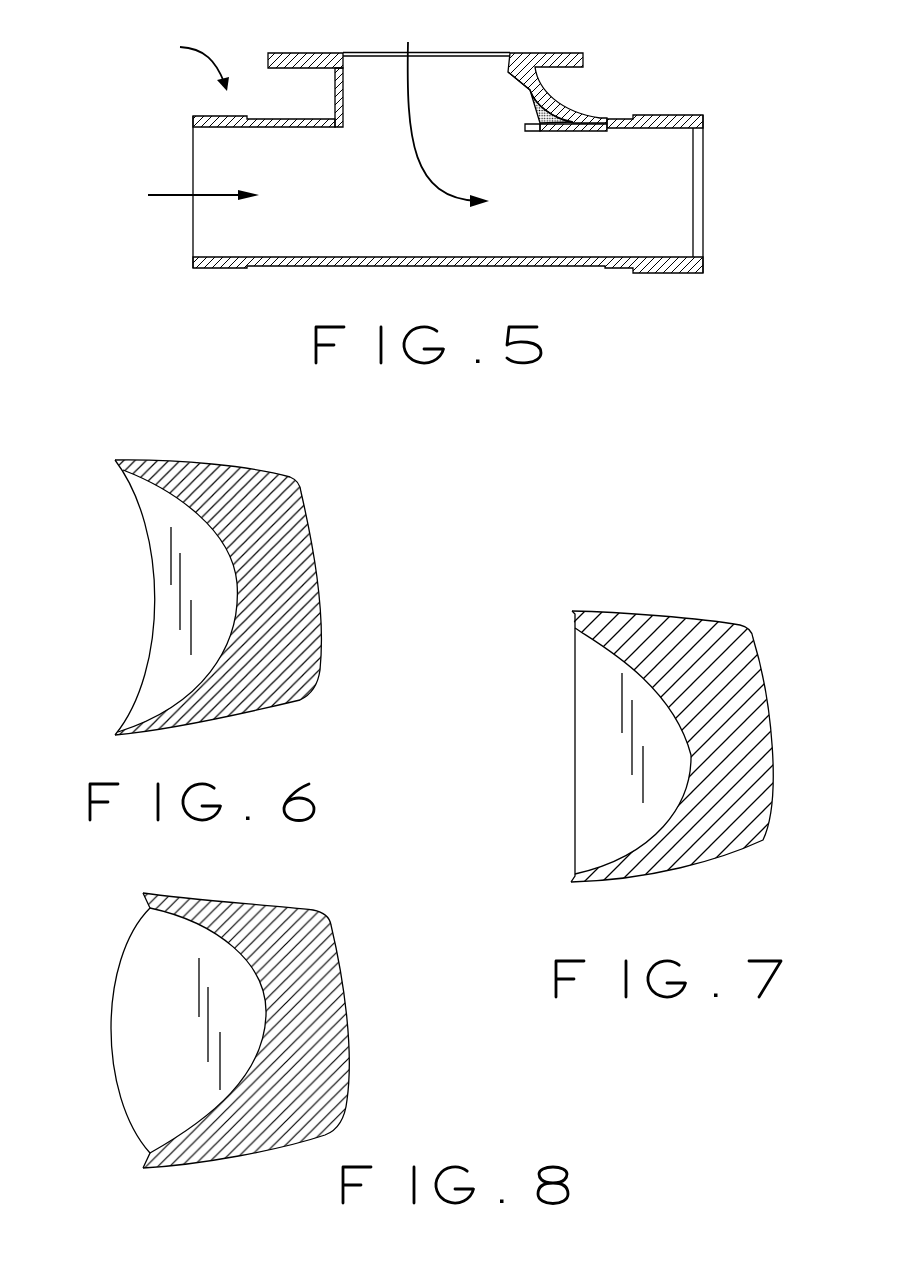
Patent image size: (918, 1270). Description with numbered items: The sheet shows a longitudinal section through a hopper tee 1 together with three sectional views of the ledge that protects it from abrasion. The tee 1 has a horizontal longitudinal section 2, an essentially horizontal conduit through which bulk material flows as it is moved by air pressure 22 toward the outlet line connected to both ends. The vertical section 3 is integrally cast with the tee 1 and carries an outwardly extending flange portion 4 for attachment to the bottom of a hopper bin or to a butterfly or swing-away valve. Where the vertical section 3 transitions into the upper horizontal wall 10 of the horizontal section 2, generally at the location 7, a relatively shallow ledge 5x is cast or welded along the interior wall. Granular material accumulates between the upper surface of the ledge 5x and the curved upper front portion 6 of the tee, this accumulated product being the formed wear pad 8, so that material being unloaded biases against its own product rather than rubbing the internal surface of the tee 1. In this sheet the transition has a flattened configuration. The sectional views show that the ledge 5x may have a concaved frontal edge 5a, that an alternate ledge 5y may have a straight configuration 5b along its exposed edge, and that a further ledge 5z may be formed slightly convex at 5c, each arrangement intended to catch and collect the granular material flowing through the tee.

In FIG. 5, the hopper tee 1 is at (197, 63).
In FIG. 5, the horizontal longitudinal section 2 is at (685, 264).
In FIG. 5, the vertical section 3 is at (347, 93).
In FIG. 5, the flange portion 4 is at (290, 53).
In FIG. 5, the frontal edge 5a is at (520, 128).
In FIG. 6, the frontal edge 5a is at (153, 612).
In FIG. 7, the straight configuration 5b is at (575, 770).
In FIG. 8, the convex edge 5c is at (118, 967).
In FIG. 5, the ledge 5x is at (546, 133).
In FIG. 6, the ledge 5x is at (203, 585).
In FIG. 7, the ledge 5y is at (642, 738).
In FIG. 8, the ledge 5z is at (155, 1062).
In FIG. 5, the upper front portion 6 is at (527, 83).
In FIG. 5, the transition location 7 is at (583, 118).
In FIG. 6, the transition location 7 is at (267, 555).
In FIG. 7, the transition location 7 is at (720, 703).
In FIG. 8, the transition location 7 is at (297, 988).
In FIG. 5, the formed wear pad 8 is at (537, 107).
In FIG. 5, the upper horizontal wall 10 is at (666, 124).
In FIG. 5, the air pressure 22 is at (173, 196).